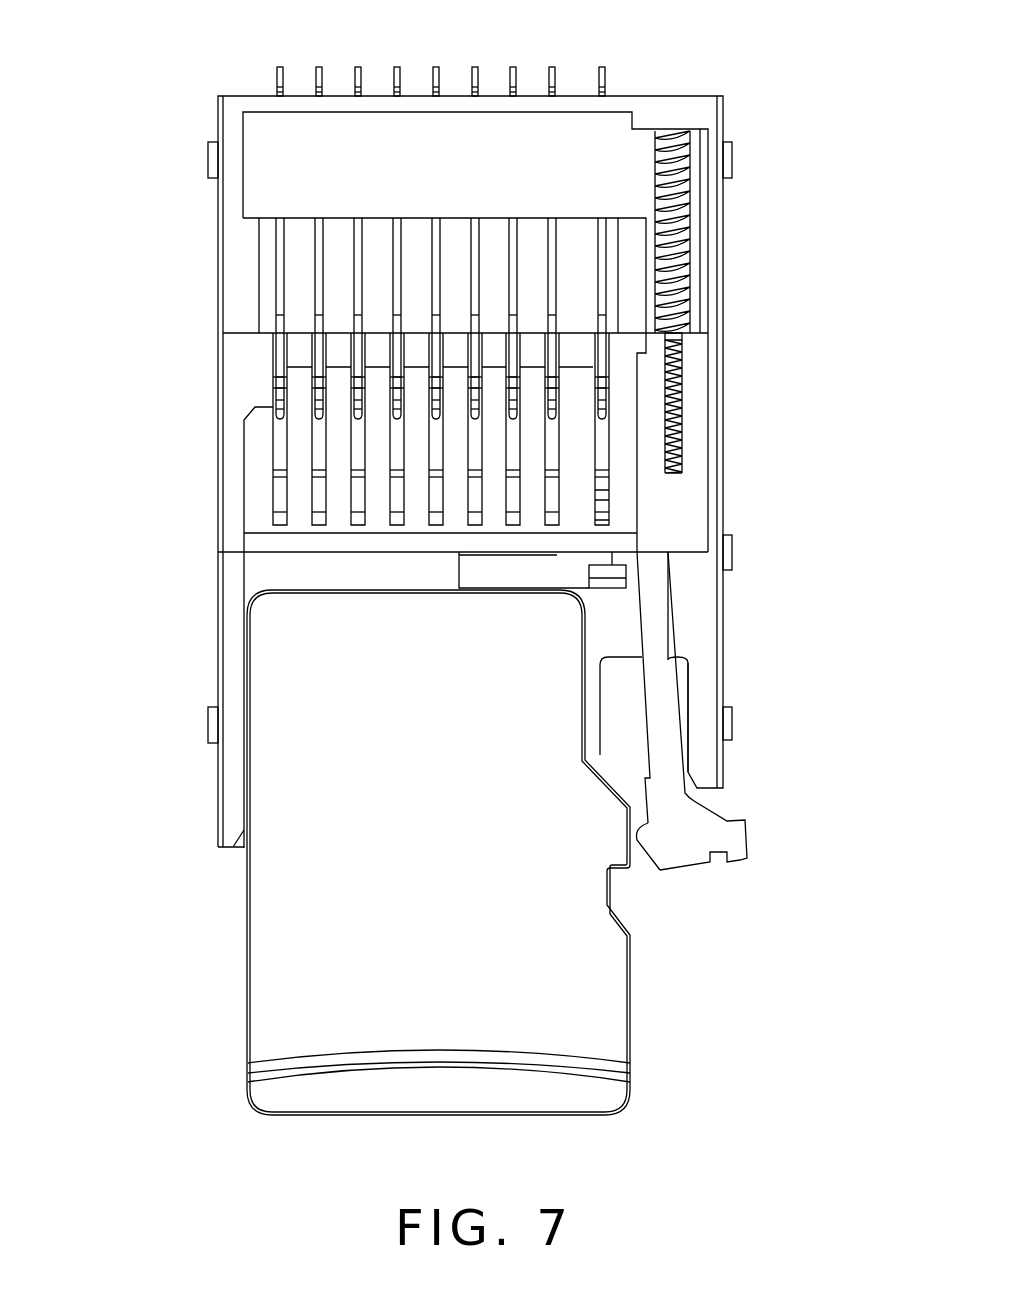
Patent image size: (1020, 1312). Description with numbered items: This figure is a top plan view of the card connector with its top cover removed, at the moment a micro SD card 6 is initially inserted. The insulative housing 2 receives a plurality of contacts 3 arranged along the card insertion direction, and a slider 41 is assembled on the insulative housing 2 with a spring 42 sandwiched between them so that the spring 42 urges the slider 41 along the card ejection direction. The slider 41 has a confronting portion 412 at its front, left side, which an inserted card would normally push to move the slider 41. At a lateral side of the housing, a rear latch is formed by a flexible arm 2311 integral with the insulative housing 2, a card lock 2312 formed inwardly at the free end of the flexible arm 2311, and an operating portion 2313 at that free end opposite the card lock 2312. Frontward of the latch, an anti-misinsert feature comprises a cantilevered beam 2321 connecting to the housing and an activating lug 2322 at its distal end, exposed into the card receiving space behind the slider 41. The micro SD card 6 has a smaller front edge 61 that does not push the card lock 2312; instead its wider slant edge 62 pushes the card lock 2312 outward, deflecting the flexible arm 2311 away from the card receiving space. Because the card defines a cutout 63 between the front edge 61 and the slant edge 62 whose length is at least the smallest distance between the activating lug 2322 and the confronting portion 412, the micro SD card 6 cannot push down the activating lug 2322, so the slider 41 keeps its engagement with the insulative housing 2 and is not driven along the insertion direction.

The insulative housing 2 is at (240, 244).
The contacts 3 is at (358, 68).
The slider 41 is at (695, 400).
The spring 42 is at (682, 210).
The confronting portion 412 is at (250, 415).
The micro SD card 6 is at (597, 1020).
The front edge 61 is at (330, 583).
The slant edge 62 is at (612, 785).
The cutout 63 is at (610, 638).
The flexible arm 2311 is at (658, 728).
The card lock 2312 is at (640, 838).
The operating portion 2313 is at (738, 842).
The cantilevered beam 2321 is at (523, 572).
The activating lug 2322 is at (612, 573).